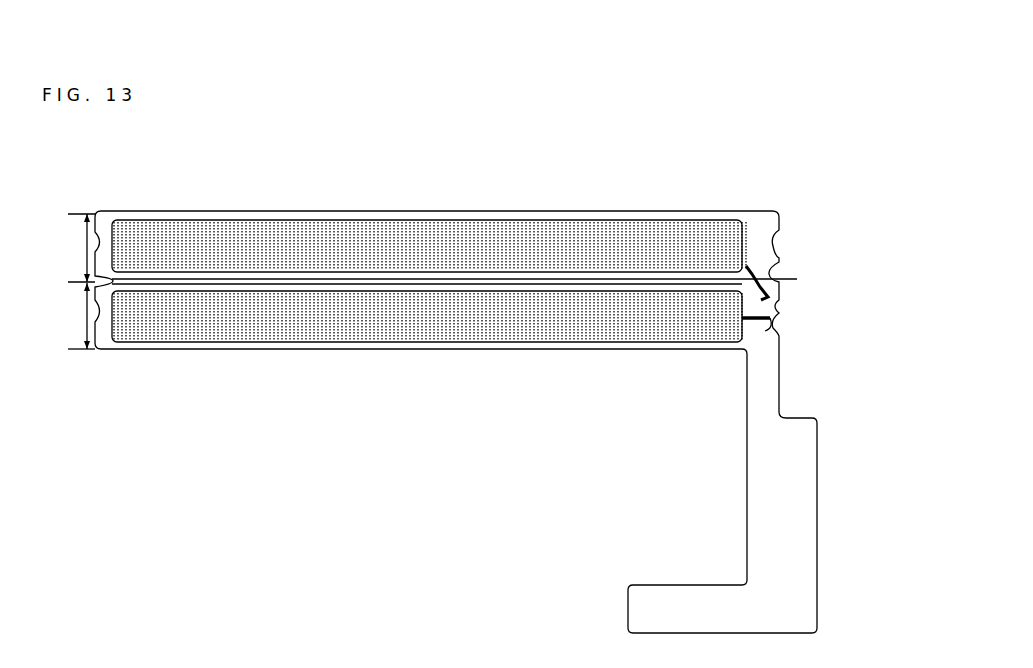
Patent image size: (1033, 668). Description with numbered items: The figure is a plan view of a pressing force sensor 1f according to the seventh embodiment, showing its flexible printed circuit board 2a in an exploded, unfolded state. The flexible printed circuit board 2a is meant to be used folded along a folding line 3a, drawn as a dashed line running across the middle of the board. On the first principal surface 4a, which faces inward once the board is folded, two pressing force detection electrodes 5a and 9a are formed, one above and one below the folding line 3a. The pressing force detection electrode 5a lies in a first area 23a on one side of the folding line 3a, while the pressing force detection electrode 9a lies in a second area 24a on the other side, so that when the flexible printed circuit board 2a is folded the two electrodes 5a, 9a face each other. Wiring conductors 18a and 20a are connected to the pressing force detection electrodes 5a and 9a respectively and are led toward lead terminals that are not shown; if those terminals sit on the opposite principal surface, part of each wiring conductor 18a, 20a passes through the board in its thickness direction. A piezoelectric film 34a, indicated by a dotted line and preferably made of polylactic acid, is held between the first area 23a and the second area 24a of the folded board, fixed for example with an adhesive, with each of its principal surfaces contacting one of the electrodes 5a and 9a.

The pressing force sensor 1f is at (292, 163).
The flexible printed circuit board 2a is at (465, 209).
The folding line 3a is at (548, 278).
The first principal surface 4a is at (752, 216).
The pressing force detection electrode 5a is at (373, 231).
The pressing force detection electrode 9a is at (363, 337).
The wiring conductor 18a is at (753, 266).
The wiring conductor 20a is at (773, 325).
The first area 23a is at (84, 236).
The second area 24a is at (84, 306).
The piezoelectric film 34a is at (236, 353).